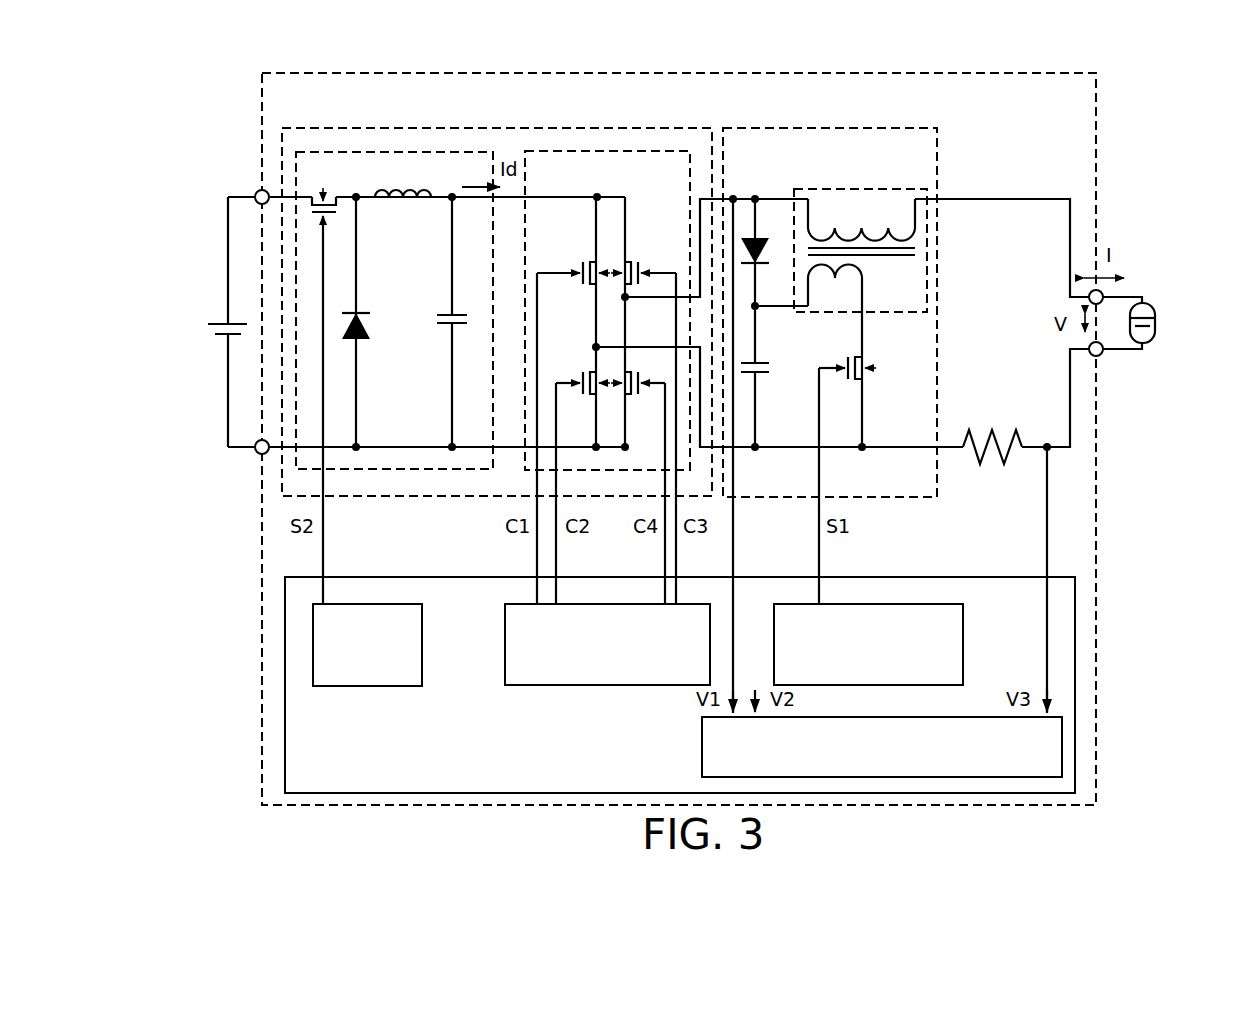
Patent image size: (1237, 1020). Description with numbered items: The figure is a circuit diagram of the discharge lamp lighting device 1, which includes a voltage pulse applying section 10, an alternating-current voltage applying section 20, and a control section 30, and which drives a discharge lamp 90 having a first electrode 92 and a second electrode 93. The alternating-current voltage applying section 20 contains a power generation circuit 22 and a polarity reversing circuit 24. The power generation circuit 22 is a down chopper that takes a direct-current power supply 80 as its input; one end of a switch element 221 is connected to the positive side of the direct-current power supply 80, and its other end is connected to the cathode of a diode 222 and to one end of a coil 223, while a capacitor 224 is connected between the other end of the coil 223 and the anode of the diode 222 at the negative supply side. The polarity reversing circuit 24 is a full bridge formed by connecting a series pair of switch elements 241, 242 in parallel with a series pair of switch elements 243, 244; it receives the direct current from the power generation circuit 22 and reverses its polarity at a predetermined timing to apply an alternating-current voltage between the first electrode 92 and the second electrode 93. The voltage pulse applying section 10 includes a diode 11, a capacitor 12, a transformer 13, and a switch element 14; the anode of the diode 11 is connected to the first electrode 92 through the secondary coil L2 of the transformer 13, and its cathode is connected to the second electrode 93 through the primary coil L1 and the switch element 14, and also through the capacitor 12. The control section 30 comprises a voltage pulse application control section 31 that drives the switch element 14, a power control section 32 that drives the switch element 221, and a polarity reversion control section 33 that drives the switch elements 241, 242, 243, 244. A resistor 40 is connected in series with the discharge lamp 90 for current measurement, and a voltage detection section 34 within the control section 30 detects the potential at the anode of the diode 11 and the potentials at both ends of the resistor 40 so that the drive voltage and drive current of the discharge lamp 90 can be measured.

The discharge lamp lighting device 1 is at (806, 72).
The voltage pulse applying section 10 is at (938, 142).
The diode 11 is at (765, 237).
The capacitor 12 is at (766, 355).
The transformer 13 is at (884, 189).
The switch element 14 is at (857, 471).
The primary coil L1 is at (862, 277).
The secondary coil L2 is at (915, 229).
The alternating-current voltage applying section 20 is at (438, 128).
The power generation circuit 22 is at (358, 152).
The switch element 221 is at (322, 383).
The diode 222 is at (373, 322).
The coil 223 is at (403, 180).
The capacitor 224 is at (466, 322).
The polarity reversing circuit 24 is at (618, 151).
The switch element 241 is at (573, 422).
The switch element 242 is at (576, 474).
The switch element 243 is at (646, 422).
The switch element 244 is at (642, 474).
The control section 30 is at (982, 577).
The voltage pulse application control section 31 is at (883, 604).
The power control section 32 is at (386, 604).
The polarity reversion control section 33 is at (597, 604).
The voltage detection section 34 is at (983, 717).
The resistor 40 is at (992, 432).
The direct-current power supply 80 is at (216, 322).
The discharge lamp 90 is at (1143, 305).
The first electrode 92 is at (1154, 318).
The second electrode 93 is at (1150, 326).